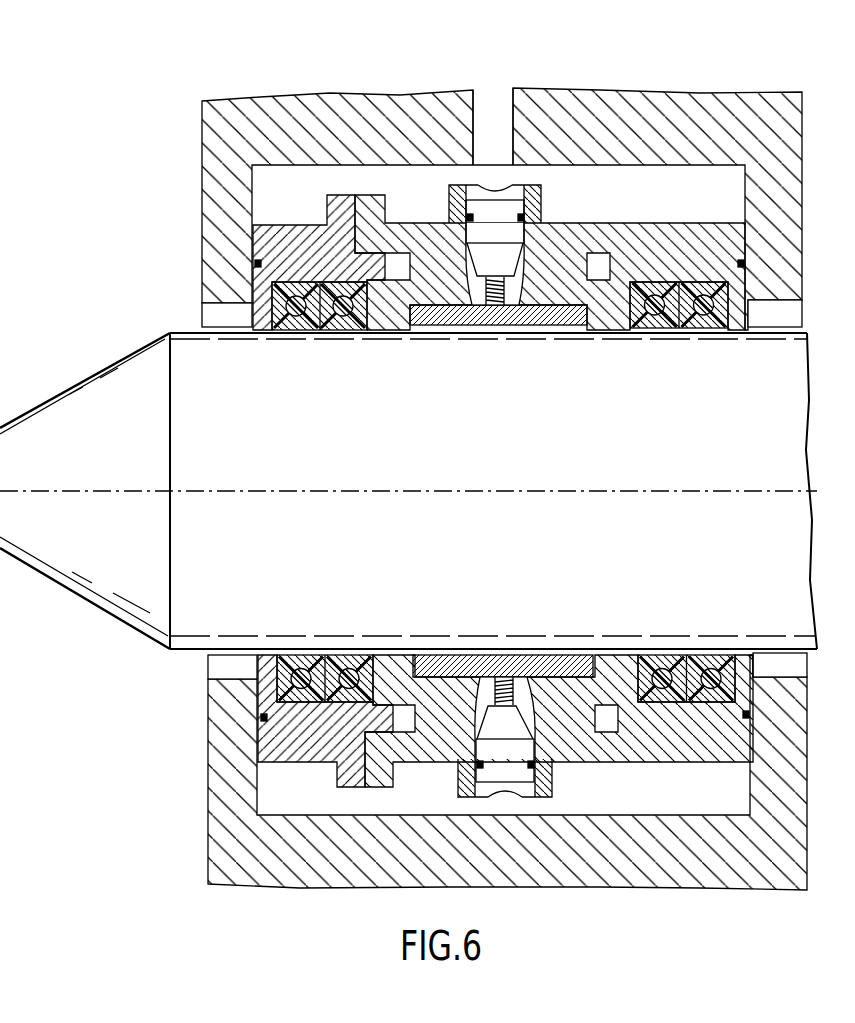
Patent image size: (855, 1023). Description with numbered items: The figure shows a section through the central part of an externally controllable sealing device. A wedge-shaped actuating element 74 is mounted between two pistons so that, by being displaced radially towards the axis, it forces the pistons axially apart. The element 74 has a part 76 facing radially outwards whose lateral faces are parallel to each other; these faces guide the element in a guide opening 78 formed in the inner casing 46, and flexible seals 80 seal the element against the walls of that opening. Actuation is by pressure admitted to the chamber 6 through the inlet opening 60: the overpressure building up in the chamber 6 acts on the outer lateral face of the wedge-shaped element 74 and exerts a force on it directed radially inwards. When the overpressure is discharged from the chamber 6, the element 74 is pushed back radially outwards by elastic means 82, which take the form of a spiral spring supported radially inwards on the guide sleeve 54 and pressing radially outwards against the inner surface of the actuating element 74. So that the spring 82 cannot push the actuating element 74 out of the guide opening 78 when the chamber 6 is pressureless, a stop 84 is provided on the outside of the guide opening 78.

The chamber 6 is at (678, 173).
The inner casing 46 is at (703, 242).
The guide sleeve 54 is at (502, 313).
The inlet opening 60 is at (493, 108).
The wedge-shaped element 74 is at (507, 260).
The part facing radially outwards 76 is at (485, 218).
The flexible seal 80 is at (524, 218).
The elastic means 82 is at (500, 680).
The guide opening 78 is at (462, 783).
The stop 84 is at (540, 790).